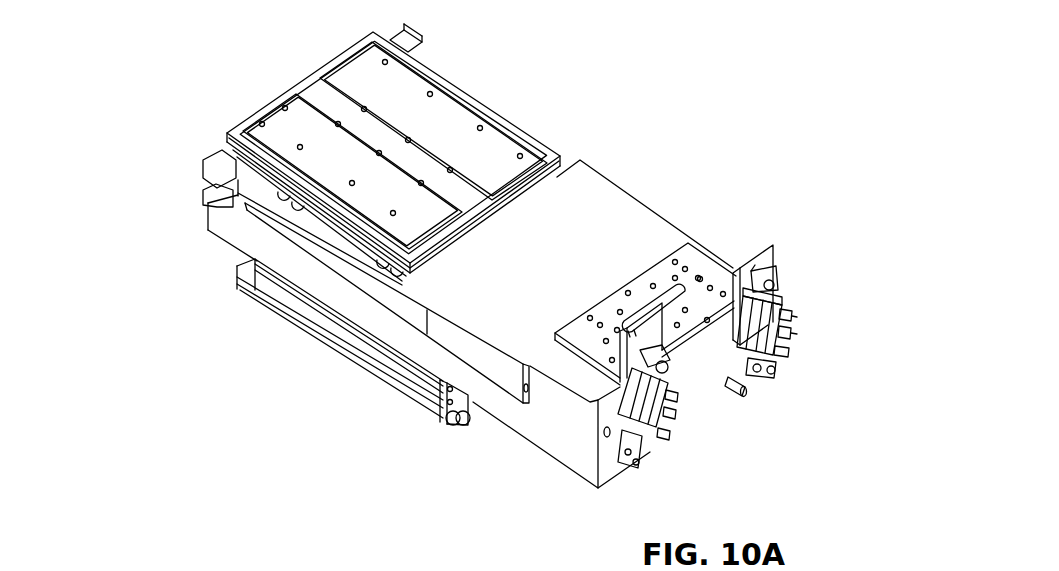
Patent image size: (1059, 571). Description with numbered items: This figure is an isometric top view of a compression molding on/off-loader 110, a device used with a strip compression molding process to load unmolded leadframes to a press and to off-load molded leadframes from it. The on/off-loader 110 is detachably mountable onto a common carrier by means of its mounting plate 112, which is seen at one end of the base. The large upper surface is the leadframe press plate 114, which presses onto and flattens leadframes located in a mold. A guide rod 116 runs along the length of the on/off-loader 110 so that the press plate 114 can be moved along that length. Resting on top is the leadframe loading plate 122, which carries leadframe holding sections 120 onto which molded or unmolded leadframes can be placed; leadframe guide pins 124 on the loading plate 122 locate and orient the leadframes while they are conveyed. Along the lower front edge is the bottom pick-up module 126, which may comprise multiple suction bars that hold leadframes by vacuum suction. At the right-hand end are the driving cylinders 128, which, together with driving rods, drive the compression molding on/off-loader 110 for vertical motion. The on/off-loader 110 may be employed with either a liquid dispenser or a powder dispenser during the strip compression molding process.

The compression molding on/off-loader 110 is at (648, 81).
The mounting plate 112 is at (700, 262).
The leadframe press plate 114 is at (590, 211).
The guide rod 116 is at (311, 233).
The leadframe holding sections 120 is at (389, 191).
The leadframe loading plate 122 is at (309, 91).
The leadframe guide pins 124 is at (272, 95).
The bottom pick-up module 126 is at (306, 342).
The driving cylinders 128 is at (753, 326).